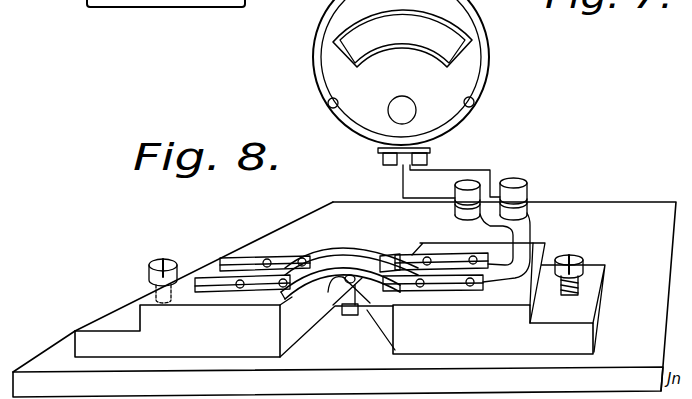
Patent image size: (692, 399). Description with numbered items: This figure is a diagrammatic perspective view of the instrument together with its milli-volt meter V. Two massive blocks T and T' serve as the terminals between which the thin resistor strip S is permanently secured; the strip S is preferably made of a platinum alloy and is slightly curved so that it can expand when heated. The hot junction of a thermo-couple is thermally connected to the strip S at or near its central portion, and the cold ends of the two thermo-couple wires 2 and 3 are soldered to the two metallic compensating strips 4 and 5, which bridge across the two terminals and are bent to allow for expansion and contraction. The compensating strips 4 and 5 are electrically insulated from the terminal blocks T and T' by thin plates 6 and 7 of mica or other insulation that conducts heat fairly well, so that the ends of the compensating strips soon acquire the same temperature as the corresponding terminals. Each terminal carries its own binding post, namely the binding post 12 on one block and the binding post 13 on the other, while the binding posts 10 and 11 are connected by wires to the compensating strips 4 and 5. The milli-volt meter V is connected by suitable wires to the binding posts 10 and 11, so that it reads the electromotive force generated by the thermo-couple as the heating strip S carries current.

The thermo-couple wire 2 is at (328, 292).
The thermo-couple wire 3 is at (371, 258).
The compensating strip 4 is at (354, 255).
The compensating strip 5 is at (307, 290).
The insulating plate 6 is at (485, 286).
The insulating plate 7 is at (272, 258).
The binding post 10 is at (517, 180).
The binding post 11 is at (466, 184).
The binding post 12 is at (160, 261).
The binding post 13 is at (575, 262).
The resistor strip S is at (352, 315).
The milli-volt meter V is at (466, 67).
The terminal block T is at (486, 298).
The terminal block T' is at (234, 279).